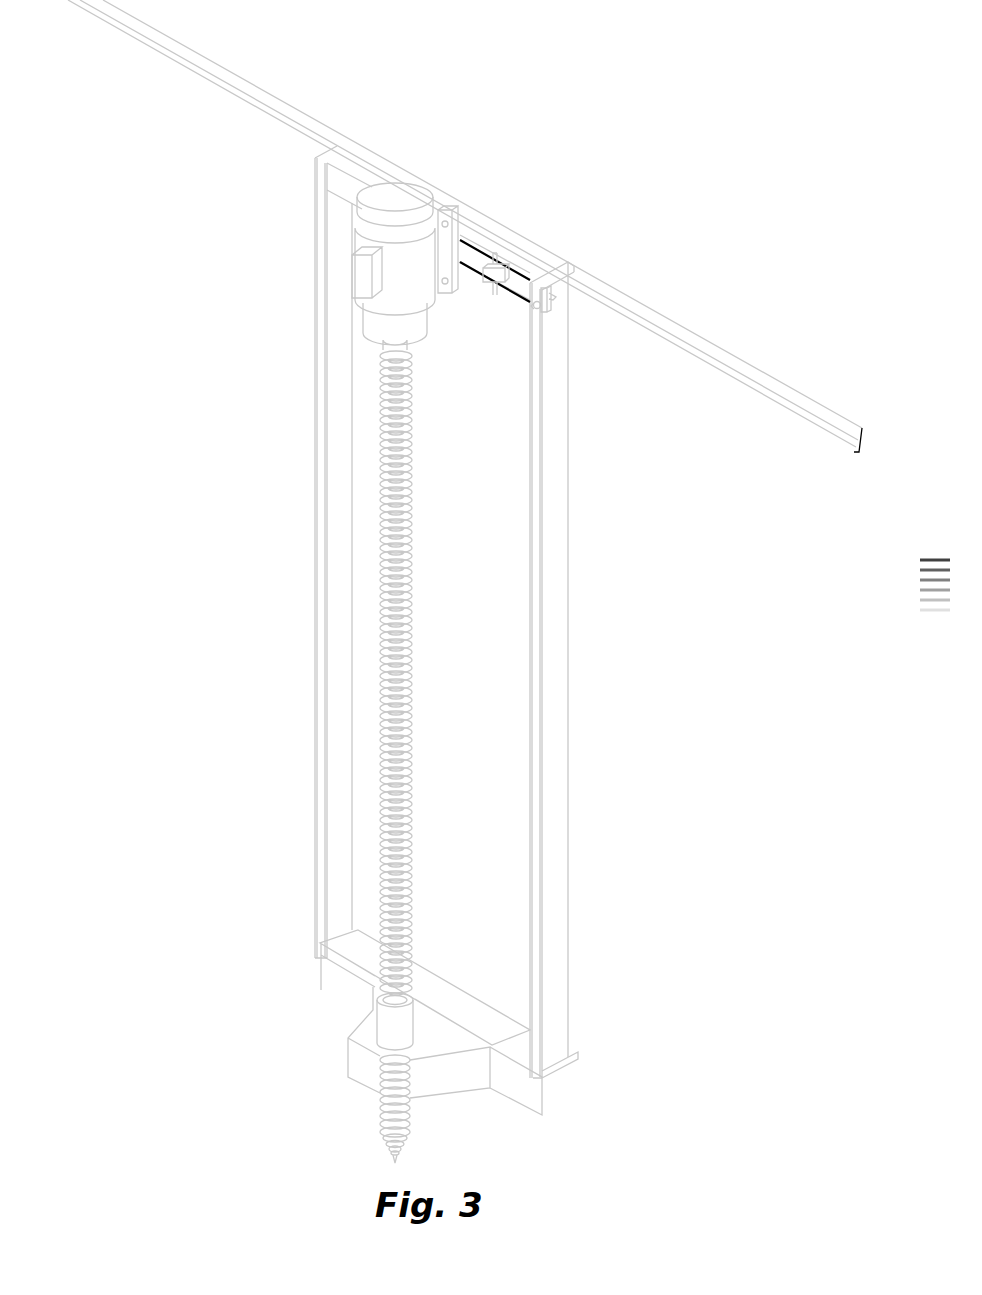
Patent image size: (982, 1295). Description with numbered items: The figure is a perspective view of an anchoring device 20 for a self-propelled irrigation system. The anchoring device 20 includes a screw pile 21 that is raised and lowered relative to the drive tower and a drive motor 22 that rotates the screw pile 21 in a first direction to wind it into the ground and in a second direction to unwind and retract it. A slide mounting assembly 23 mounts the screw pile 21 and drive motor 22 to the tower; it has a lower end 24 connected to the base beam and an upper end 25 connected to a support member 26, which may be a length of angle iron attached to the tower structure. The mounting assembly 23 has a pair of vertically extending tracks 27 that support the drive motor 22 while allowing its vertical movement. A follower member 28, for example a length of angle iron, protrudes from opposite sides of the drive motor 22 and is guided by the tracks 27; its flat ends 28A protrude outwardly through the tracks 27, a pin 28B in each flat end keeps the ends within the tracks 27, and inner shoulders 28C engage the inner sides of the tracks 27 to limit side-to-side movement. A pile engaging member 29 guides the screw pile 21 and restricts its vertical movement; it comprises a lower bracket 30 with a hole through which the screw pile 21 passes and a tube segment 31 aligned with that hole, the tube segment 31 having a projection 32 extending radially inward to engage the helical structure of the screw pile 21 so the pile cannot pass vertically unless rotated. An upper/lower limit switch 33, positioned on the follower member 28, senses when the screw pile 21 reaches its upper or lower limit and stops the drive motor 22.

The anchoring device 20 is at (232, 820).
The screw pile 21 is at (382, 447).
The drive motor 22 is at (408, 192).
The slide mounting assembly 23 is at (318, 680).
The lower end 24 is at (557, 1055).
The upper end 25 is at (563, 302).
The support member 26 is at (257, 90).
The vertically extending tracks 27 is at (330, 545).
The follower member 28 is at (477, 247).
The flat ends 28A is at (546, 292).
The pin 28B is at (540, 306).
The inner shoulders 28C is at (347, 167).
The pile engaging member 29 is at (377, 1012).
The lower bracket 30 is at (448, 1010).
The tube segment 31 is at (392, 1030).
The projection 32 is at (387, 1000).
The upper/lower limit switch 33 is at (491, 276).